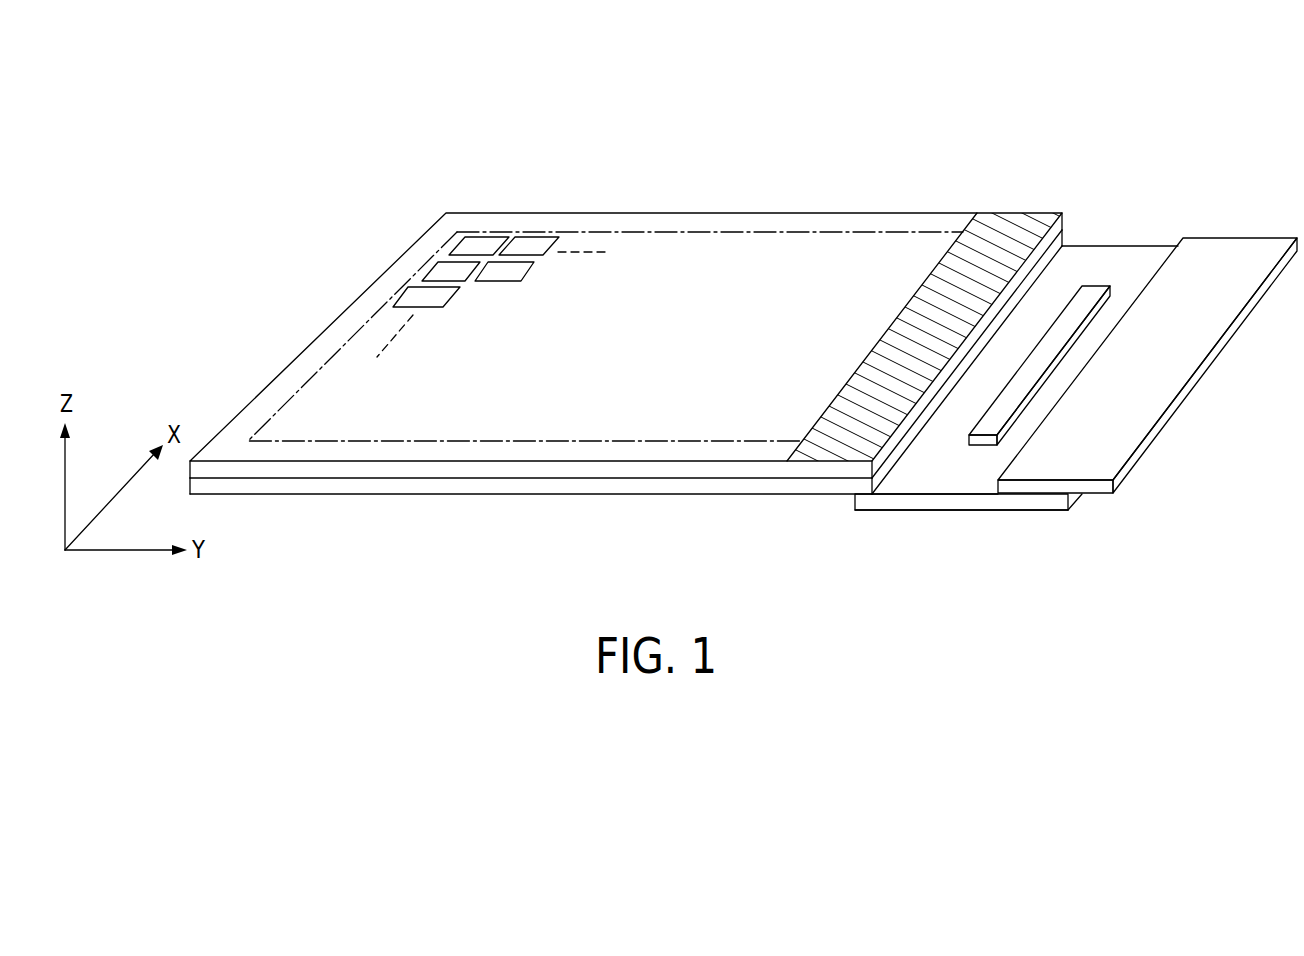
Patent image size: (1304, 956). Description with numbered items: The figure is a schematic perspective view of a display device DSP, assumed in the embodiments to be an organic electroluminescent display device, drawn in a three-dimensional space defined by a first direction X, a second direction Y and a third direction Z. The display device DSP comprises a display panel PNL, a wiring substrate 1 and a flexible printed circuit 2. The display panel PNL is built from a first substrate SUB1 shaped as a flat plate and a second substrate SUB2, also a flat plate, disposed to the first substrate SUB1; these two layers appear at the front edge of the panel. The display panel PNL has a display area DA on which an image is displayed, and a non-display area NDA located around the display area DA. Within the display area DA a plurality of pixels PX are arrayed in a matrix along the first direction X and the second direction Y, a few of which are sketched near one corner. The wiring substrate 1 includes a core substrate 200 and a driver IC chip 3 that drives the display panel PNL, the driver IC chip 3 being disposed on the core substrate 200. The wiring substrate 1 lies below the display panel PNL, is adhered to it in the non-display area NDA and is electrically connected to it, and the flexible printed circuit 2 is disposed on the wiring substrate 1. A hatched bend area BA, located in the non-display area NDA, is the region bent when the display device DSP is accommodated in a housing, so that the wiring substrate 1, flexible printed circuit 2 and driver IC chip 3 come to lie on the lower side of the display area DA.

The display device DSP is at (1003, 158).
The display panel PNL is at (866, 206).
The first substrate SUB1 is at (798, 485).
The second substrate SUB2 is at (722, 468).
The display area DA is at (742, 220).
The non-display area NDA is at (780, 225).
The bend area BA is at (1027, 223).
The pixel PX is at (532, 243).
The wiring substrate 1 is at (977, 520).
The flexible printed circuit 2 is at (1103, 487).
The driver IC chip 3 is at (1090, 294).
The core substrate 200 is at (903, 502).